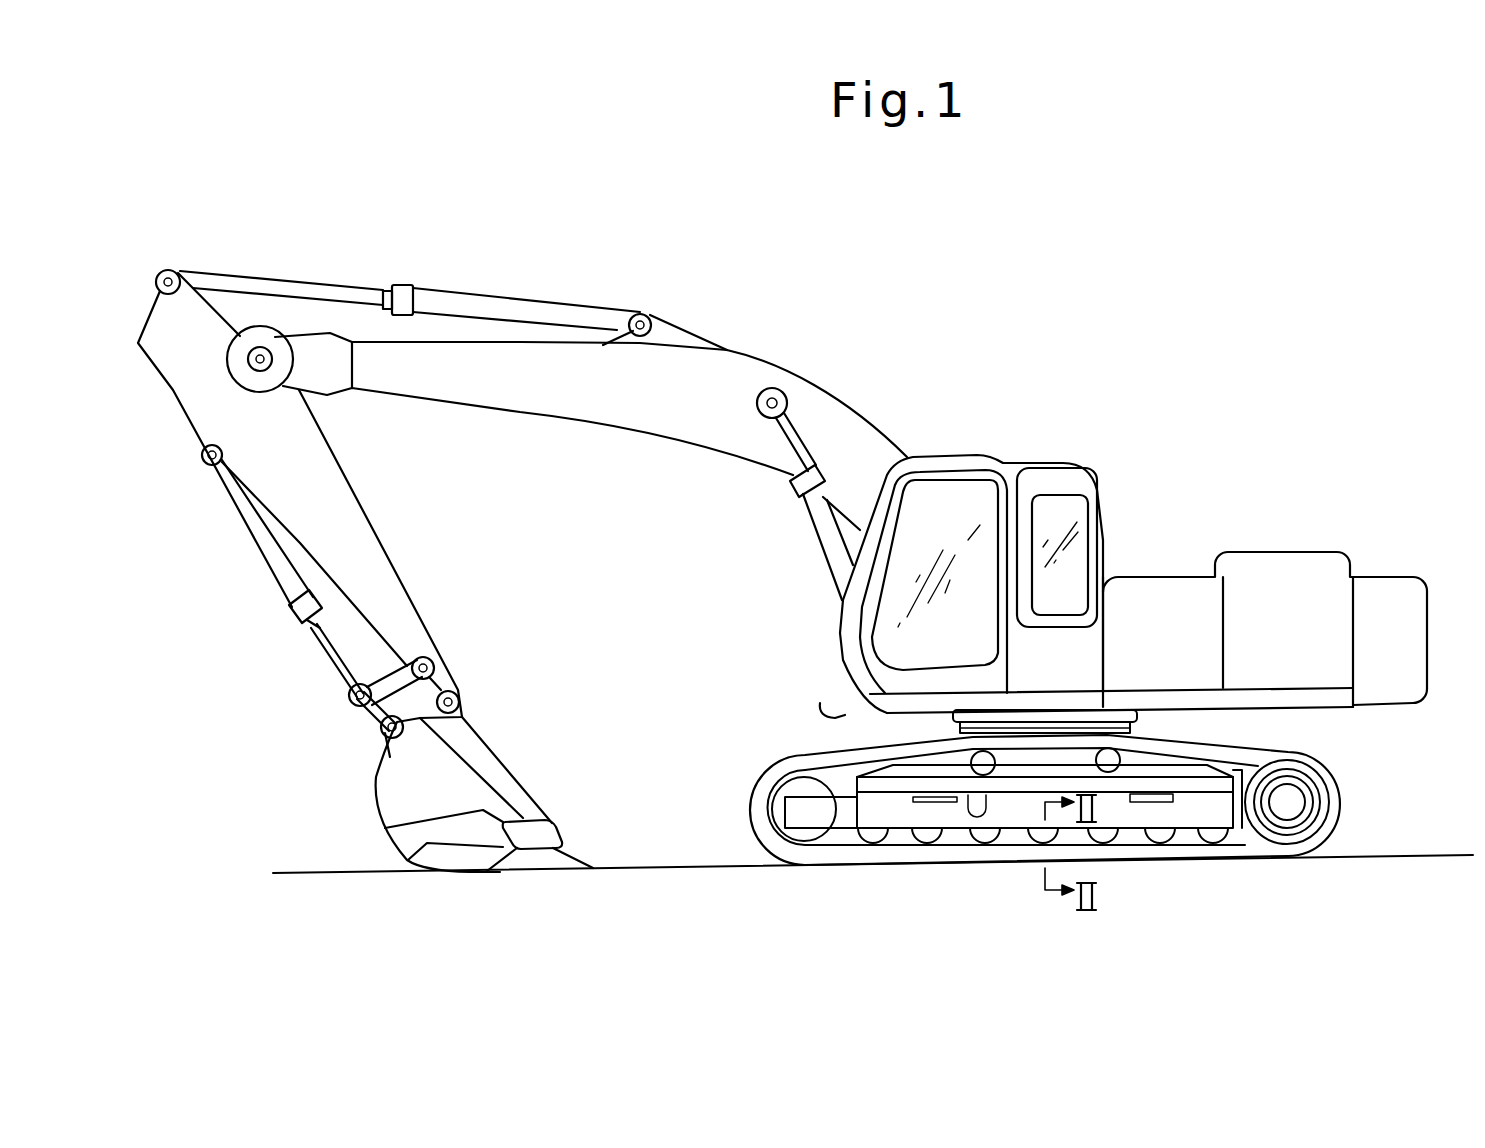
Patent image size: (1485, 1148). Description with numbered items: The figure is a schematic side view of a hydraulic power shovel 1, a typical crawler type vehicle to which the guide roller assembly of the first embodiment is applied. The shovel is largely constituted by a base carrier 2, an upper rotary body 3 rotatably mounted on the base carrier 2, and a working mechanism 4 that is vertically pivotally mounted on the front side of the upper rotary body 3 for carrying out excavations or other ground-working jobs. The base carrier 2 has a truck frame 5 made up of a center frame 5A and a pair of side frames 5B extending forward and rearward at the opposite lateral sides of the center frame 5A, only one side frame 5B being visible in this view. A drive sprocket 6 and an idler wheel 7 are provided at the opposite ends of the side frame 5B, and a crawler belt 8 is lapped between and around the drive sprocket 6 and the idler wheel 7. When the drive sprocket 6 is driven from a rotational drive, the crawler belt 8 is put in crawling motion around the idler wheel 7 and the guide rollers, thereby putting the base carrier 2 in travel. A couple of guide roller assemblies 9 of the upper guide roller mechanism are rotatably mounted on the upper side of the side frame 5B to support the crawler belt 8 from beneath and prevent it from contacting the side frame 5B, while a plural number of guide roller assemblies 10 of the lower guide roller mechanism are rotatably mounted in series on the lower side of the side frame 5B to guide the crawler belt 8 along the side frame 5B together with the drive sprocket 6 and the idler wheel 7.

The hydraulic power shovel 1 is at (1177, 572).
The base carrier 2 is at (1342, 810).
The upper rotary body 3 is at (1307, 550).
The working mechanism 4 is at (788, 365).
The truck frame 5 is at (851, 787).
The center frame 5A is at (933, 765).
The side frame 5B is at (1020, 810).
The drive sprocket 6 is at (1270, 832).
The idler wheel 7 is at (802, 837).
The crawler belt 8 is at (1323, 777).
The guide roller assemblies of upper guide roller mechanism 9 is at (973, 775).
The guide roller assemblies of lower guide roller mechanism 10 is at (874, 838).